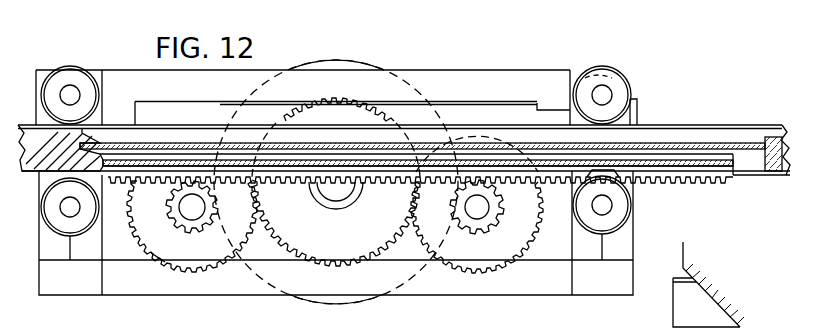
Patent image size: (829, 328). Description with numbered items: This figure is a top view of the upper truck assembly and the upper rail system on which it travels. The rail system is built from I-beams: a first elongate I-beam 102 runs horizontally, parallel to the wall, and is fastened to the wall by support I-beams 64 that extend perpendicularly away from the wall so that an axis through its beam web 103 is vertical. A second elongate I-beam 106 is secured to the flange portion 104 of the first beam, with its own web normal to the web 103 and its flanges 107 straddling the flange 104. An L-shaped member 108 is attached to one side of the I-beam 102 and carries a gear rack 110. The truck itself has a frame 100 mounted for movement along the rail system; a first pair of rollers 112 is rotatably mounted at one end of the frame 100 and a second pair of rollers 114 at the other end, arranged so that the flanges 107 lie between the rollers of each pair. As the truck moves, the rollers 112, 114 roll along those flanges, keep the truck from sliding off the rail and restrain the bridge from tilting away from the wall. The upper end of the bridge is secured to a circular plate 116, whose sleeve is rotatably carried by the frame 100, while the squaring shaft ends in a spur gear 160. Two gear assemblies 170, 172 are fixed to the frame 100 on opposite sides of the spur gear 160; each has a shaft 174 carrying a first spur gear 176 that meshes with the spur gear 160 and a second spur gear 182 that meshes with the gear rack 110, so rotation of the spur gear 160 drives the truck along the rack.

The support I-beam 64 is at (690, 308).
The frame 100 is at (448, 283).
The first elongate I-beam 102 is at (661, 140).
The beam web 103 is at (685, 147).
The flange portion 104 is at (728, 140).
The second elongate I-beam 106 is at (787, 139).
The flanges 107 is at (742, 124).
The L-shaped member 108 is at (702, 168).
The gear rack 110 is at (672, 173).
The first pair of rollers 112 is at (74, 78).
The second pair of rollers 114 is at (598, 77).
The circular plate 116 is at (350, 65).
The spur gear 160 is at (337, 237).
The gear assembly 170 is at (158, 264).
The gear assembly 172 is at (511, 276).
The shaft 174 is at (200, 211).
The first spur gear 176 is at (190, 257).
The second spur gear 182 is at (188, 232).